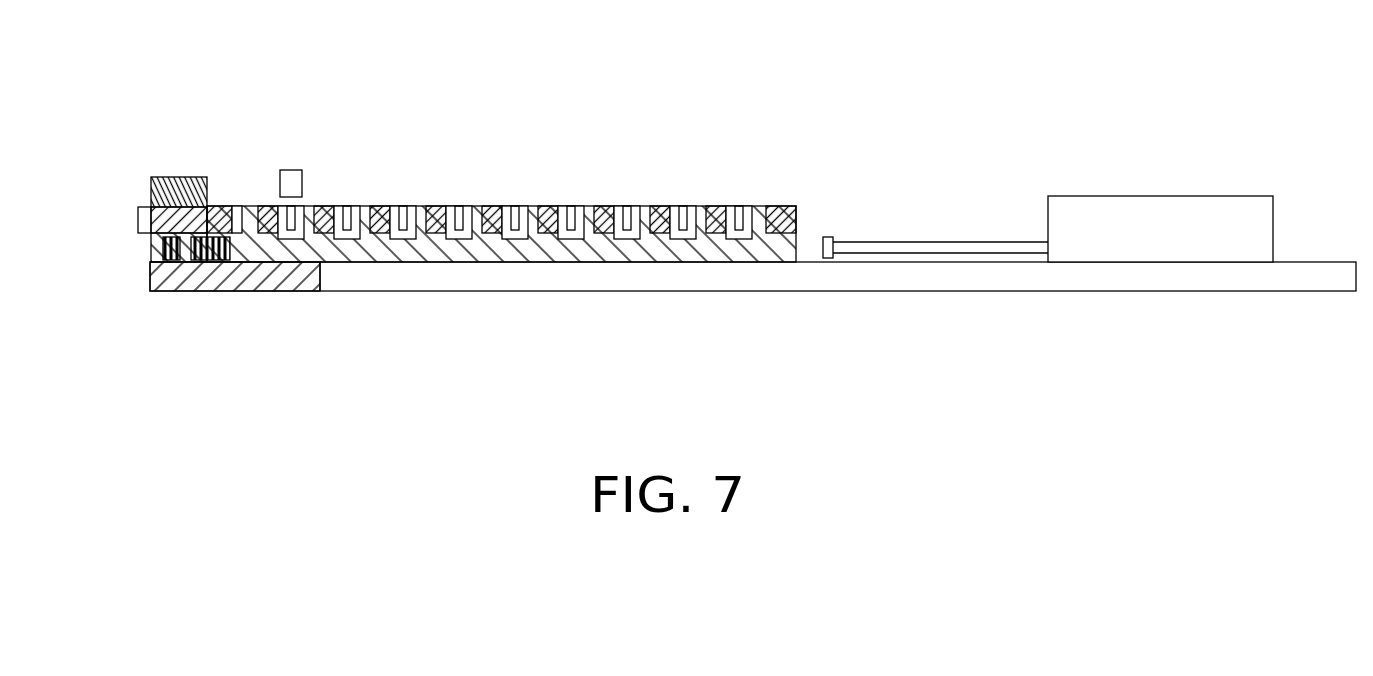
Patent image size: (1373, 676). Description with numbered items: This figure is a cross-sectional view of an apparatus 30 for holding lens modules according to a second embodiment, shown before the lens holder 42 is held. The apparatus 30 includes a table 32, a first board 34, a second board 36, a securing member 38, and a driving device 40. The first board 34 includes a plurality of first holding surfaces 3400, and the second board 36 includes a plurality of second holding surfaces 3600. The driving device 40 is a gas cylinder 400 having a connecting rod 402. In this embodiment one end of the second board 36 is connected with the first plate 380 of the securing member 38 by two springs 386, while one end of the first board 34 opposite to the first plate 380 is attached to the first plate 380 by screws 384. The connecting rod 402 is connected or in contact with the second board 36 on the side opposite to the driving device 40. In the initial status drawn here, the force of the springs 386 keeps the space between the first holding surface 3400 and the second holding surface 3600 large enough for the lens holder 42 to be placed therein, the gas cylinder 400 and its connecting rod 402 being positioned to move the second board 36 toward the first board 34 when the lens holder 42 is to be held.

The apparatus 30 is at (654, 46).
The table 32 is at (1231, 275).
The first board 34 is at (780, 218).
The first holding surfaces 3400 is at (338, 205).
The second board 36 is at (758, 247).
The second holding surfaces 3600 is at (360, 235).
The securing member 38 is at (145, 160).
The first plate 380 is at (155, 192).
The screws 384 is at (140, 222).
The springs 386 is at (163, 252).
The driving device 40 is at (1113, 178).
The gas cylinder 400 is at (1241, 227).
The connecting rod 402 is at (906, 245).
The lens holder 42 is at (294, 175).